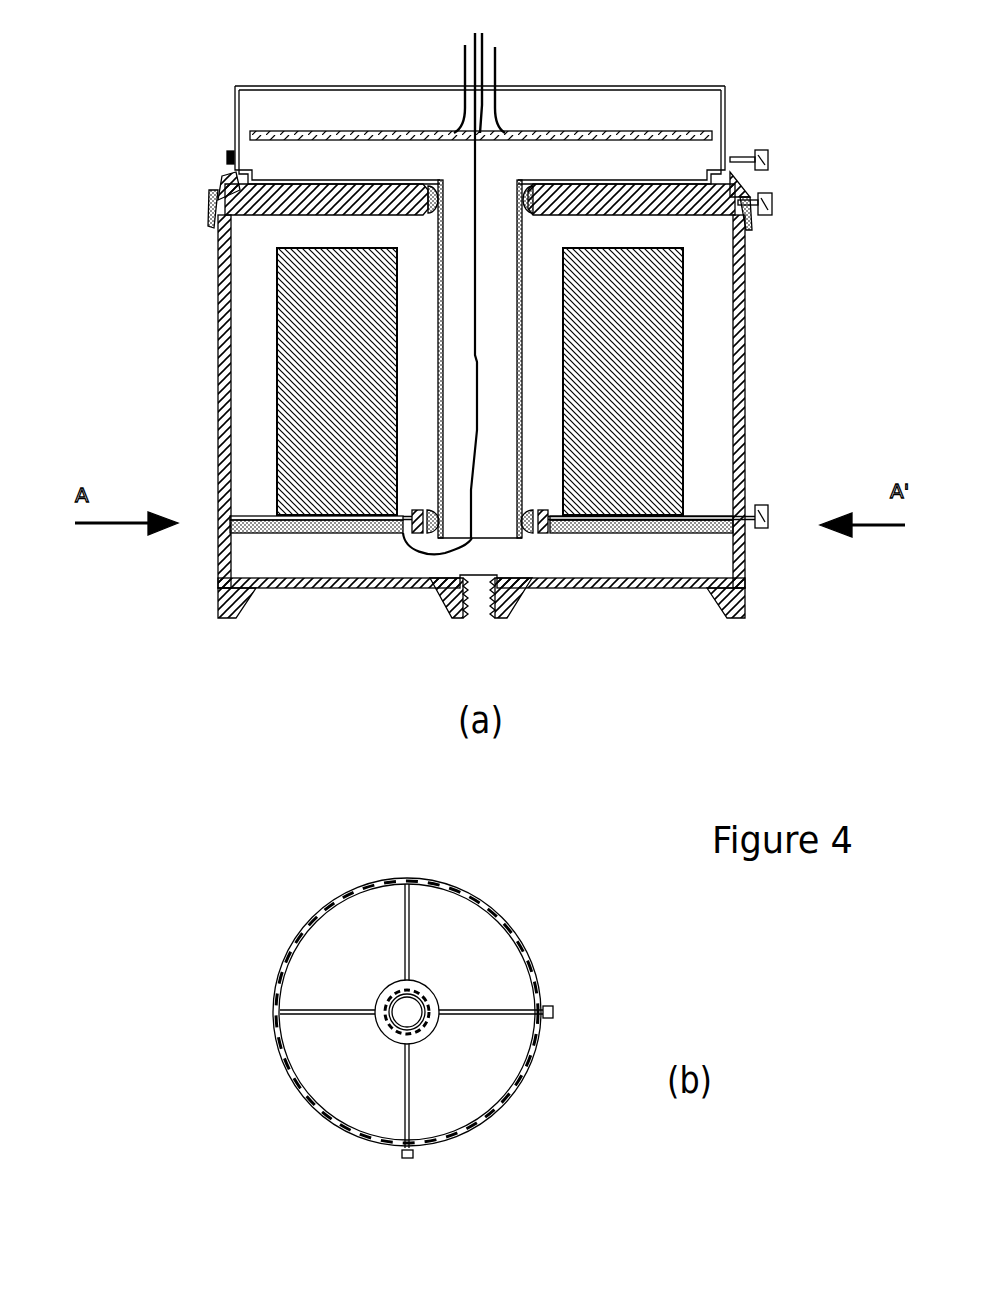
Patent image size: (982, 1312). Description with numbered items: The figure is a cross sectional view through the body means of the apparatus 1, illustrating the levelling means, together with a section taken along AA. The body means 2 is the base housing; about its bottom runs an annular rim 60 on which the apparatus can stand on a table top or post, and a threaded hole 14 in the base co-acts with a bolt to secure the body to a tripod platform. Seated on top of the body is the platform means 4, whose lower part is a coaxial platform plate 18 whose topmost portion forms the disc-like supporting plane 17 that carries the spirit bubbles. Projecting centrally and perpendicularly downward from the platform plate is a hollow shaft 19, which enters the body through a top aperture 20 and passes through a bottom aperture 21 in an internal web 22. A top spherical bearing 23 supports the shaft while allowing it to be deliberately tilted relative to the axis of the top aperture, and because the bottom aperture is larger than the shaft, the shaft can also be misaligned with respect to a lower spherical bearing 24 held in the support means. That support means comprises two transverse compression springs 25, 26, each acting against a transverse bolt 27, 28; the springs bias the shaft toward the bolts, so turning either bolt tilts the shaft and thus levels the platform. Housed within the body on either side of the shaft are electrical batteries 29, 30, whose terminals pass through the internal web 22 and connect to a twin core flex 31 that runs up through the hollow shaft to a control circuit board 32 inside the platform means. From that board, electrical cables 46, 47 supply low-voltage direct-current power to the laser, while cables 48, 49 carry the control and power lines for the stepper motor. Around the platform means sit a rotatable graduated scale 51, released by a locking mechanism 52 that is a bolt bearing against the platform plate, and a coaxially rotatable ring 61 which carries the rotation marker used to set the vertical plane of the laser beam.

The apparatus 1 is at (743, 440).
The body means 2 is at (743, 360).
The platform means 4 is at (728, 110).
The threaded hole 14 is at (502, 620).
The supporting plane 17 is at (678, 86).
The platform plate 18 is at (747, 185).
The hollow shaft 19 is at (438, 395).
The top aperture 20 is at (413, 215).
The bottom aperture 21 is at (407, 537).
The internal web 22 is at (353, 535).
The top spherical bearing 23 is at (420, 213).
The lower spherical bearing 24 is at (523, 533).
The compression spring 25 is at (277, 522).
The compression spring 26 is at (410, 922).
The transverse bolt 27 is at (772, 508).
The transverse bolt 28 is at (415, 1157).
The electrical battery 29 is at (293, 420).
The electrical battery 30 is at (673, 325).
The twin core flex 31 is at (470, 492).
The control circuit board 32 is at (273, 132).
The electrical cable 46 is at (463, 63).
The electrical cable 47 is at (472, 35).
The cable 48 is at (483, 42).
The cable 49 is at (500, 67).
The graduated scale 51 is at (215, 183).
The locking mechanism 52 is at (772, 212).
The annular rim 60 is at (743, 620).
The ring 61 is at (227, 153).